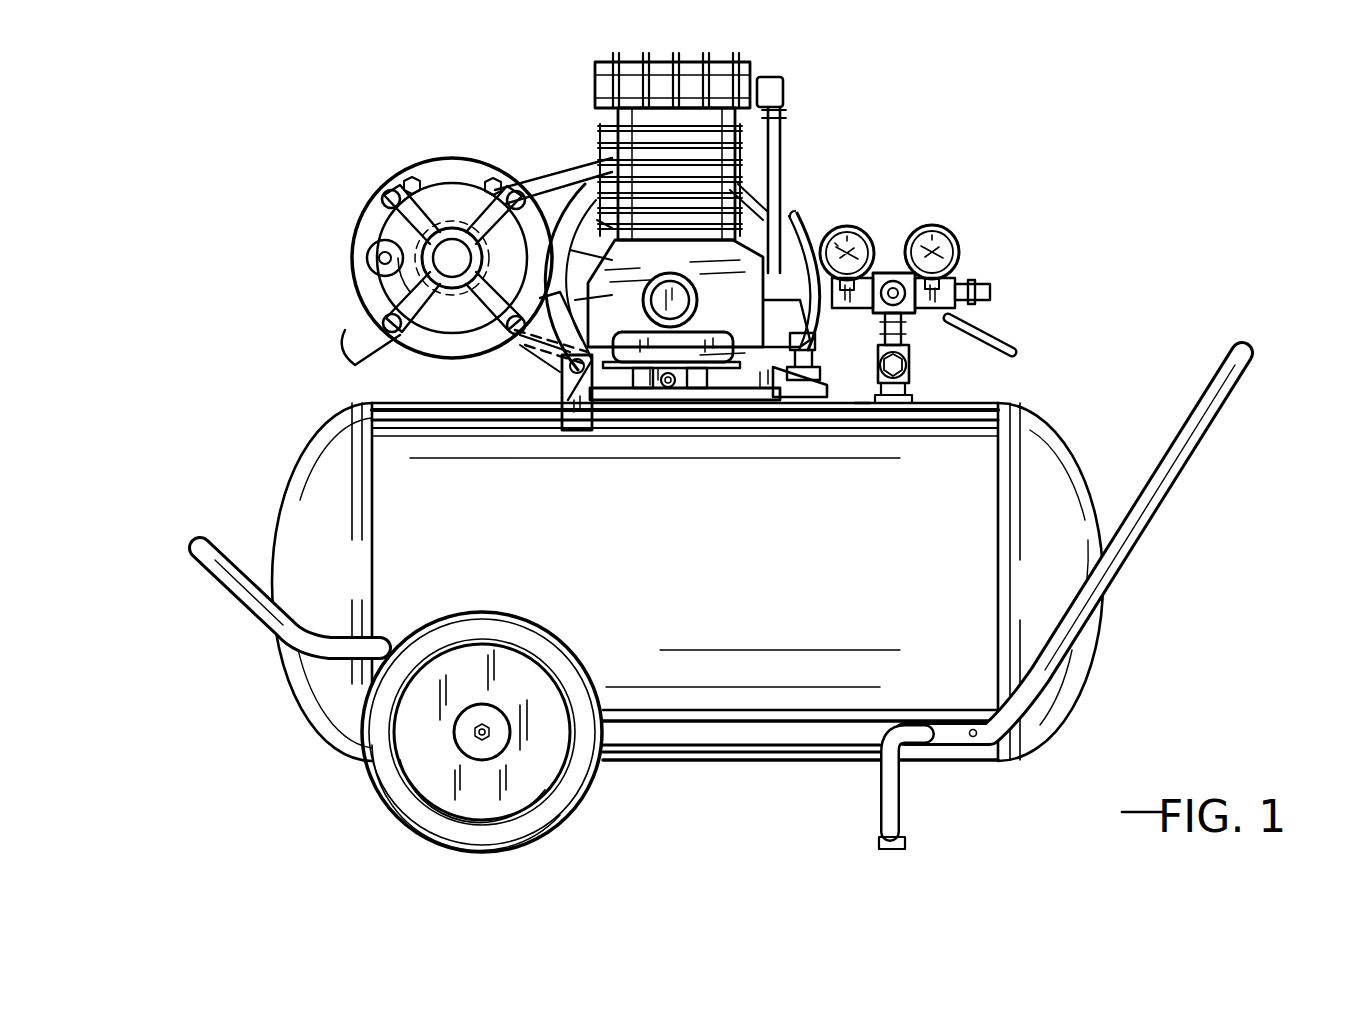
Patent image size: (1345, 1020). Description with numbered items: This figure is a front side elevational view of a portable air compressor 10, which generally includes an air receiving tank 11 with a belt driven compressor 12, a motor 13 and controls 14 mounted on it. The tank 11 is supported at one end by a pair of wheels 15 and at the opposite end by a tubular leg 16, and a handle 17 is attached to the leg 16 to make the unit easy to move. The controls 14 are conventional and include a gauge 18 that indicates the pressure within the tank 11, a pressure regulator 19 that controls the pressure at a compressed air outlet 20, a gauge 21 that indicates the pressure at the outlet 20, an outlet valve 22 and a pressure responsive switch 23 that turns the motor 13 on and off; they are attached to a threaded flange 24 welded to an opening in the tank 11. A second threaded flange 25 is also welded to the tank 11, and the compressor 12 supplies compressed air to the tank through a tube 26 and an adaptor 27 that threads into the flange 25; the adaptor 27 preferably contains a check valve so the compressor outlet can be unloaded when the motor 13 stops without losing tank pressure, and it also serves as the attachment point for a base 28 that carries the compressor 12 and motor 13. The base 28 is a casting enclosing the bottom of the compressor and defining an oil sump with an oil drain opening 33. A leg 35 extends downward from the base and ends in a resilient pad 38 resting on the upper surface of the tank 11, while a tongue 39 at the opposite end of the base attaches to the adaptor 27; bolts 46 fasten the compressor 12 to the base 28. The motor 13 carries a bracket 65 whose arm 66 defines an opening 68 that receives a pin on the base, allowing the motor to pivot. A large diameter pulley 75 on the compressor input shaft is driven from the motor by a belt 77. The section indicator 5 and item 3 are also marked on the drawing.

The portable air compressor 10 is at (290, 358).
The air receiving tank 11 is at (738, 597).
The compressor 12 is at (598, 105).
The motor 13 is at (440, 165).
The controls 14 is at (975, 232).
The wheels 15 is at (598, 790).
The tubular leg 16 is at (880, 790).
The handle 17 is at (1246, 375).
The gauge 18 is at (862, 235).
The pressure regulator 19 is at (917, 320).
The compressed air outlet 20 is at (992, 292).
The gauge 21 is at (915, 240).
The outlet valve 22 is at (1012, 347).
The pressure responsive switch 23 is at (912, 237).
The threaded flange 24 is at (915, 396).
The second threaded flange 25 is at (865, 410).
The tube 26 is at (790, 155).
The adaptor 27 is at (825, 383).
The base 28 is at (712, 378).
The mounting pad 3 is at (683, 352).
The oil drain opening 33 is at (668, 387).
The leg 35 is at (572, 408).
The pads 38 is at (577, 428).
The tongue 39 is at (790, 395).
The bolts 46 is at (622, 376).
The section line 5 is at (820, 320).
The bracket 65 is at (605, 297).
The arm 66 is at (560, 352).
The opening 68 is at (555, 372).
The pulley 75 is at (540, 200).
The belt 77 is at (575, 185).